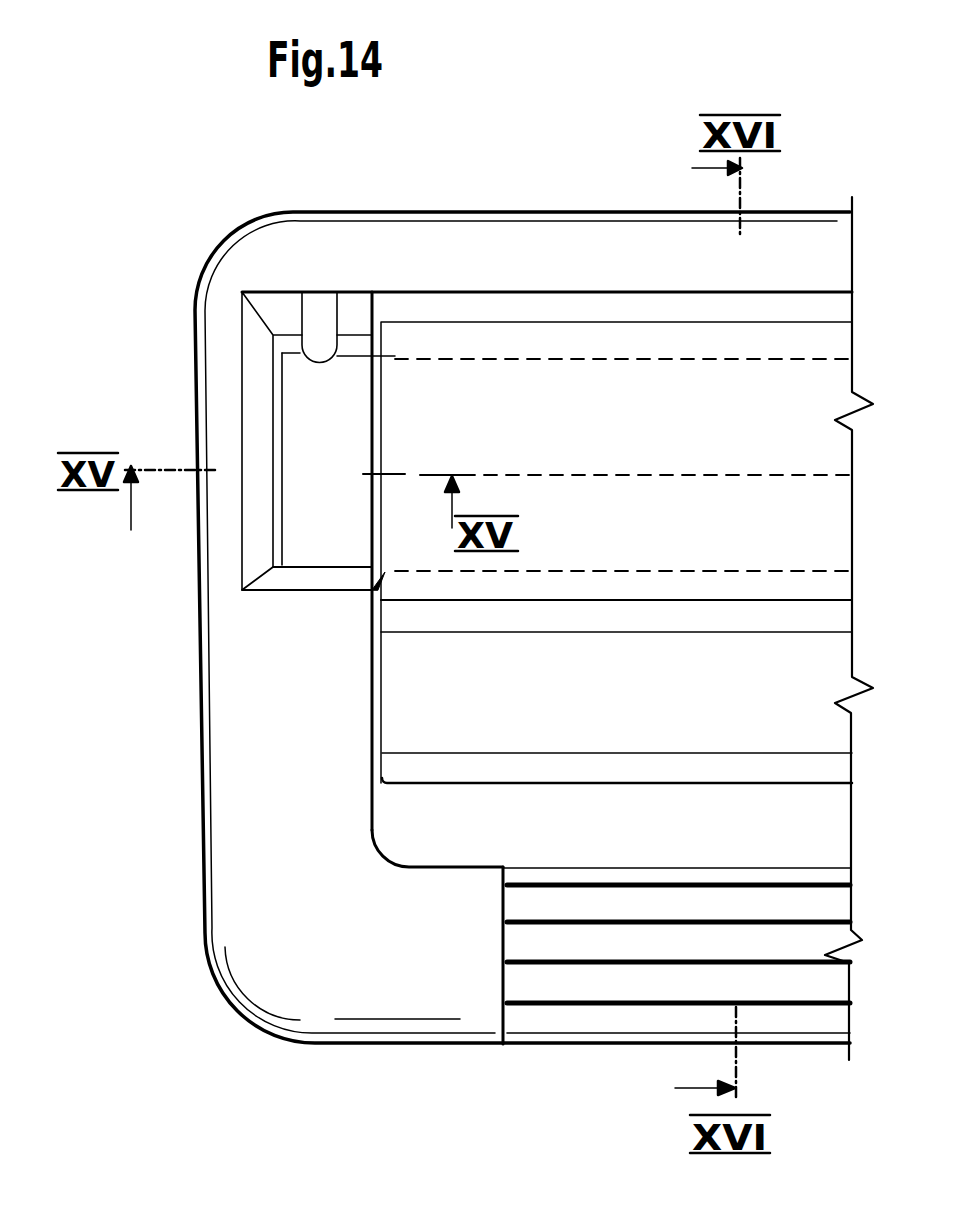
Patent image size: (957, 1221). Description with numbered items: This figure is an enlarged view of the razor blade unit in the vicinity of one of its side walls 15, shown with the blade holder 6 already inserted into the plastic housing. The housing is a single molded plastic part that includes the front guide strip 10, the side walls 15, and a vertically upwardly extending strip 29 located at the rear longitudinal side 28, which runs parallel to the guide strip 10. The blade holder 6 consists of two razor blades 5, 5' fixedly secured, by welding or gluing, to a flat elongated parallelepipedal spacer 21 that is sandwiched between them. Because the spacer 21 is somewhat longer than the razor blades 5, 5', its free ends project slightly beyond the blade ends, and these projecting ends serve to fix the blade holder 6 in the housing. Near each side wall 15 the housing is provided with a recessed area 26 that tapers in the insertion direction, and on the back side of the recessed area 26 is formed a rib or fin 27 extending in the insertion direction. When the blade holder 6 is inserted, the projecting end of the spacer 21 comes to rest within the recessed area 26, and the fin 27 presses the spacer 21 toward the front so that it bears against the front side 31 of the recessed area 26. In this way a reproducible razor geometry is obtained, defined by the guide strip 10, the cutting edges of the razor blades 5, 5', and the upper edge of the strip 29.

The side wall 15 is at (210, 310).
The recessed area 26 is at (282, 343).
The rib or fin 27 is at (317, 307).
The vertically upwardly extending strip 29 is at (437, 248).
The spacer 21 is at (348, 402).
The rear longitudinal side 28 is at (512, 318).
The front side of the recessed area 31 is at (287, 575).
The blade holder 6 is at (374, 584).
The razor blade 5 is at (616, 642).
The razor blade 5' is at (582, 787).
The front guide strip 10 is at (595, 985).